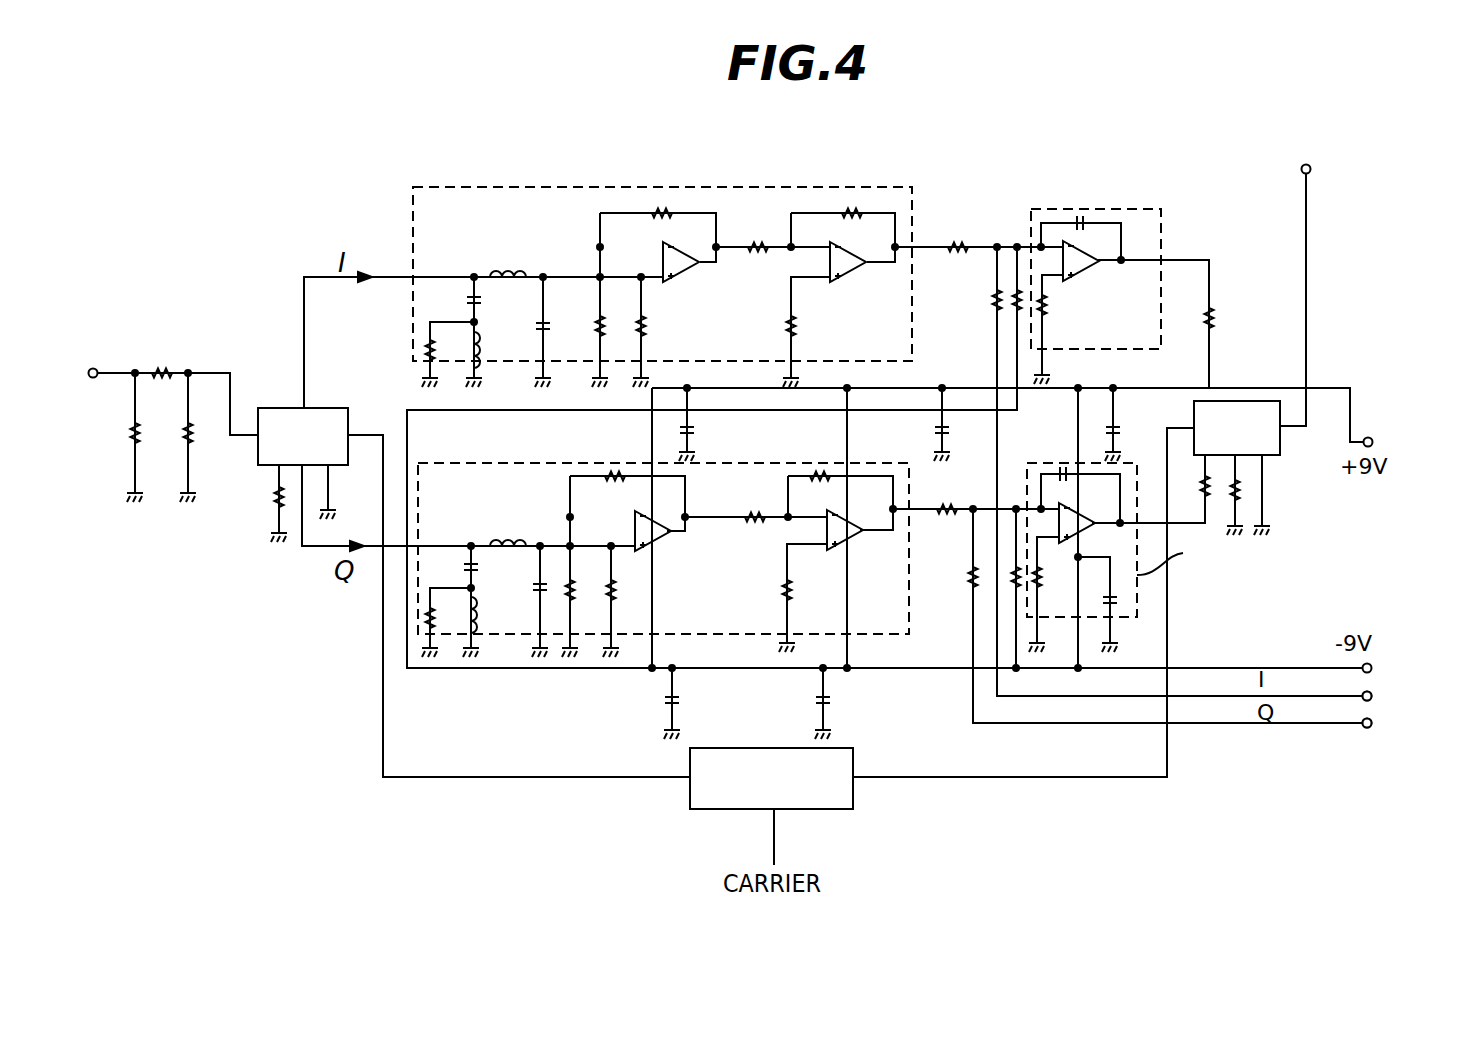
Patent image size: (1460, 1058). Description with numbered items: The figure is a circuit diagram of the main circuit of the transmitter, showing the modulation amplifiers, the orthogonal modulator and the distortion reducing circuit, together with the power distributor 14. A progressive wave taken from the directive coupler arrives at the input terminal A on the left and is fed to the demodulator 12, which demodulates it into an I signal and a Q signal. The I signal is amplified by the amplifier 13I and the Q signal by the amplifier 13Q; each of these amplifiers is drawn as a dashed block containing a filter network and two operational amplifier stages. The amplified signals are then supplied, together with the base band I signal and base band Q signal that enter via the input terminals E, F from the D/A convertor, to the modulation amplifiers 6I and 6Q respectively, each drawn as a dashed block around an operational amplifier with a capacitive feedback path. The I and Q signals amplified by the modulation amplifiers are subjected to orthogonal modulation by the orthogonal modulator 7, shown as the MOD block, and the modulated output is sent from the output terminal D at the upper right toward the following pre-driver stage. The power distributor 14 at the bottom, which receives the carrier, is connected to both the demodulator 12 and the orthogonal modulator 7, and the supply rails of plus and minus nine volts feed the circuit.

The input terminal A is at (93, 367).
The output terminal D is at (1306, 163).
The input terminal E is at (1373, 692).
The input terminal F is at (1372, 726).
The demodulator 12 is at (337, 404).
The amplifier 13Q is at (548, 180).
The amplifier 13I is at (533, 462).
The modulation amplifier 6Q is at (1066, 200).
The modulation amplifier 6I is at (1052, 458).
The orthogonal modulator 7 is at (1283, 446).
The power distributor 14 is at (752, 747).